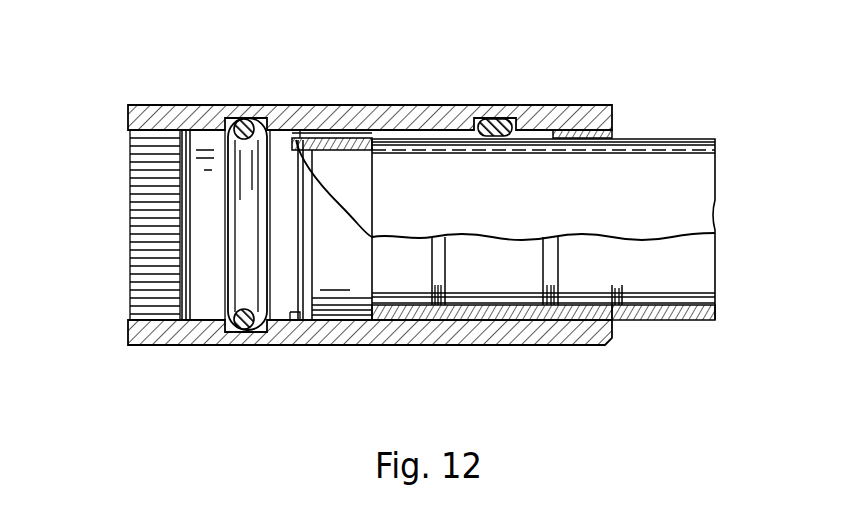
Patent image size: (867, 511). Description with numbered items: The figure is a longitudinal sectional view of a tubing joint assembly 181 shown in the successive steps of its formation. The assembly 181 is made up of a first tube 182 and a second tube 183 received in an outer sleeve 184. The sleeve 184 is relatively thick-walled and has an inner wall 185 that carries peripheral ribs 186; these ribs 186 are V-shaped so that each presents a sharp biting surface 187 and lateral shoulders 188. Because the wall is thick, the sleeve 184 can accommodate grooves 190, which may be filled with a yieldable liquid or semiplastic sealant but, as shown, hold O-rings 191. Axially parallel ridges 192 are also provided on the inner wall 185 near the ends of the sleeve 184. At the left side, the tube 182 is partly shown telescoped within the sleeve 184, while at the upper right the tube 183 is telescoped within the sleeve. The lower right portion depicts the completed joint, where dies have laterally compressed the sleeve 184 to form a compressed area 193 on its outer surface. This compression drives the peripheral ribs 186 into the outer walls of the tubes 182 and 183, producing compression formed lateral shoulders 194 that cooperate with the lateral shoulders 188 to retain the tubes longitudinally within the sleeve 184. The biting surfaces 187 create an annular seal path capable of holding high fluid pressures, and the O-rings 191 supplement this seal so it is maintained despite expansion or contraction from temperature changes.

The tubing joint assembly 181 is at (508, 81).
The tube 182 is at (336, 135).
The tube 183 is at (668, 136).
The outer sleeve 184 is at (328, 340).
The inner wall 185 is at (343, 322).
The peripheral ribs 186 is at (307, 272).
The sharp biting surface 187 is at (290, 312).
The lateral shoulders 188 is at (217, 122).
The grooves 190 is at (228, 268).
The O-rings 191 is at (237, 285).
The axially parallel ridges 192 is at (140, 174).
The compressed area 193 is at (531, 340).
The compression formed lateral shoulders 194 is at (443, 305).